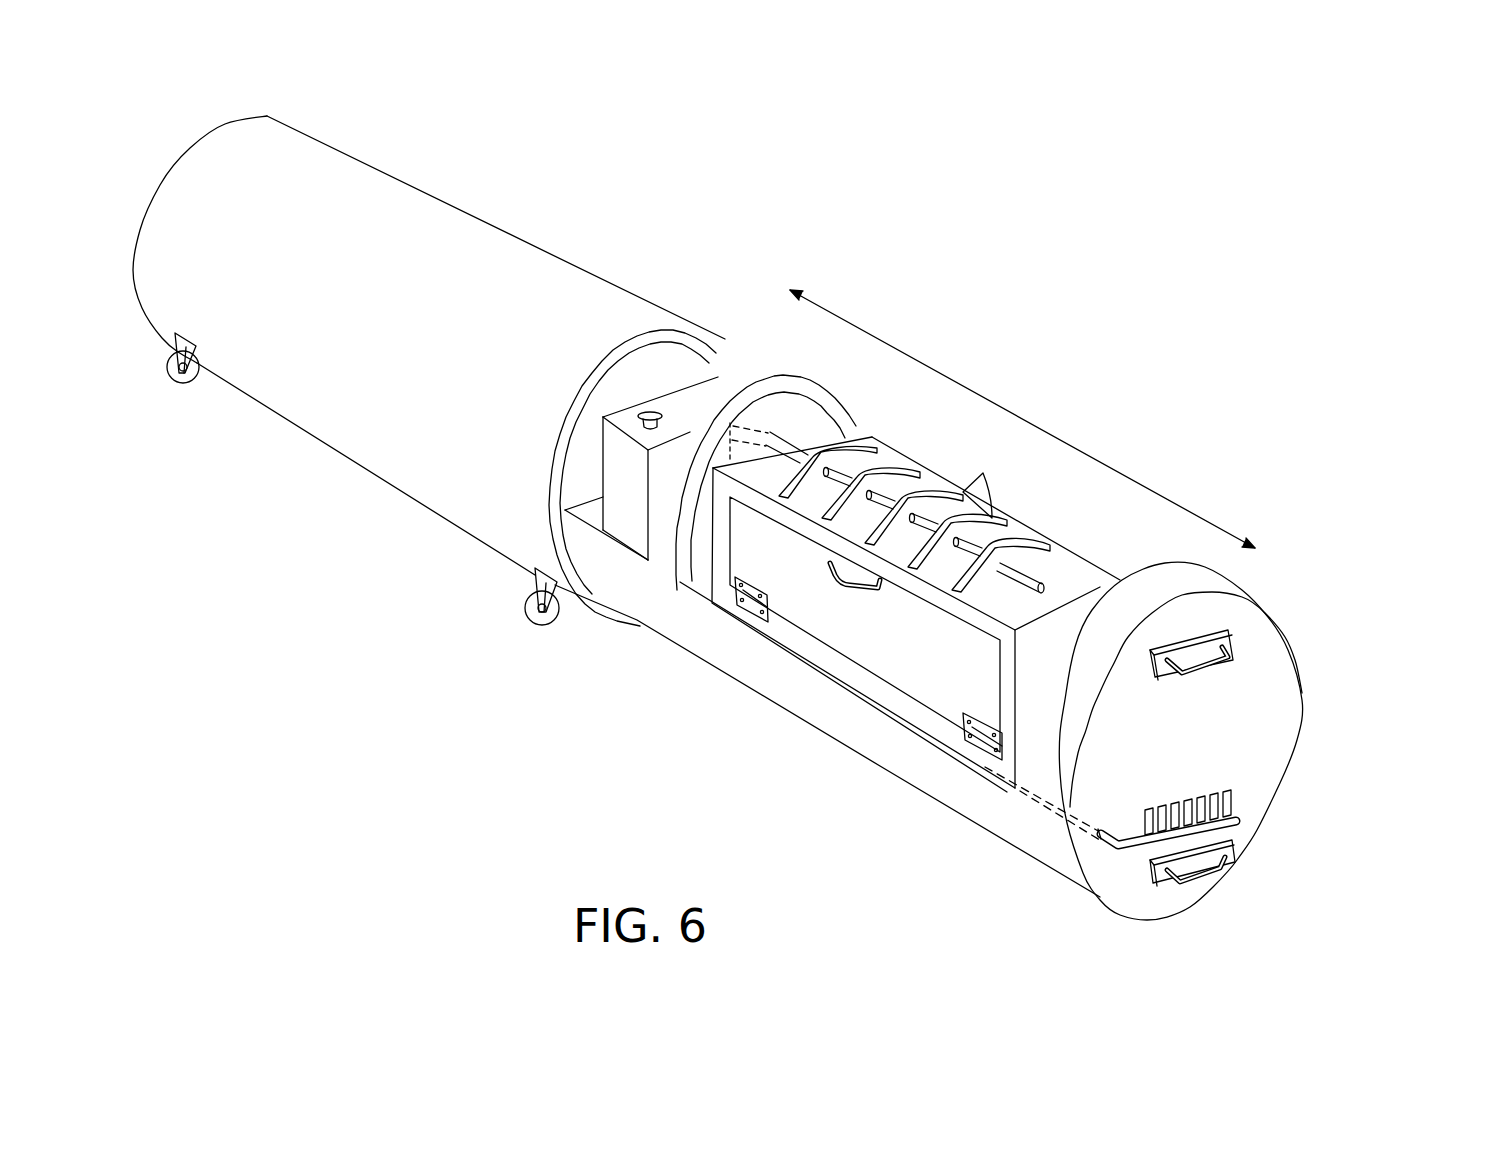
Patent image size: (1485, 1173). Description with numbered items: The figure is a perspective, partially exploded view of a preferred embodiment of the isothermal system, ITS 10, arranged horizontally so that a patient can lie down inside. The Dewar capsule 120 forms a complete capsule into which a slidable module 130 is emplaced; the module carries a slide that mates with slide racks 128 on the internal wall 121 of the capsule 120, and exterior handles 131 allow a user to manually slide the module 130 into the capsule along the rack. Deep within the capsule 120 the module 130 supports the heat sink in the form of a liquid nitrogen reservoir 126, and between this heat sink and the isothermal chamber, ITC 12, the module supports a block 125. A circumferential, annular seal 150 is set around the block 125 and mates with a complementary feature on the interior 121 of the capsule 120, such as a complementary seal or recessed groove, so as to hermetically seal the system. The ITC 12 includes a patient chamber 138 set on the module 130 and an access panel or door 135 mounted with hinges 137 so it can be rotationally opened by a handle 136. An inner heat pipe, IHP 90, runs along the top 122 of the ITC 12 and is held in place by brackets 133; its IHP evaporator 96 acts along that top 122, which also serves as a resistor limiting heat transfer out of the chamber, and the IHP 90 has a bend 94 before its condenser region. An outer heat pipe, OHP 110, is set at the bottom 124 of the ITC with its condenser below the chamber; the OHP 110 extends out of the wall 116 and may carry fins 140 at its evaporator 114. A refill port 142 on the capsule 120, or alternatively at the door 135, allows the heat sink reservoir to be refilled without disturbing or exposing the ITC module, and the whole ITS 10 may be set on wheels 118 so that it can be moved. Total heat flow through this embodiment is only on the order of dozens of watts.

The ITS 10 is at (393, 127).
The Dewar capsule 120 is at (477, 240).
The refill port 142 is at (638, 407).
The internal wall 121 is at (723, 360).
The block 125 is at (780, 375).
The bend 94 is at (760, 410).
The ITC 12 is at (875, 435).
The IHP evaporator 96 is at (850, 475).
The brackets 133 is at (913, 478).
The top 122 is at (1027, 530).
The IHP 90 is at (1060, 558).
The seal 150 is at (1190, 577).
The module 130 is at (1298, 606).
The exterior handles 131 is at (1235, 654).
The wall 116 is at (1265, 697).
The fins 140 is at (1232, 788).
The evaporator 114 is at (1237, 820).
The OHP 110 is at (1042, 805).
The patient chamber 138 is at (942, 712).
The bottom 124 is at (870, 697).
The hinges 137 is at (963, 717).
The door 135 is at (893, 645).
The handle 136 is at (830, 580).
The slide racks 128 is at (583, 590).
The liquid nitrogen reservoir 126 is at (621, 521).
The wheels 118 is at (181, 381).